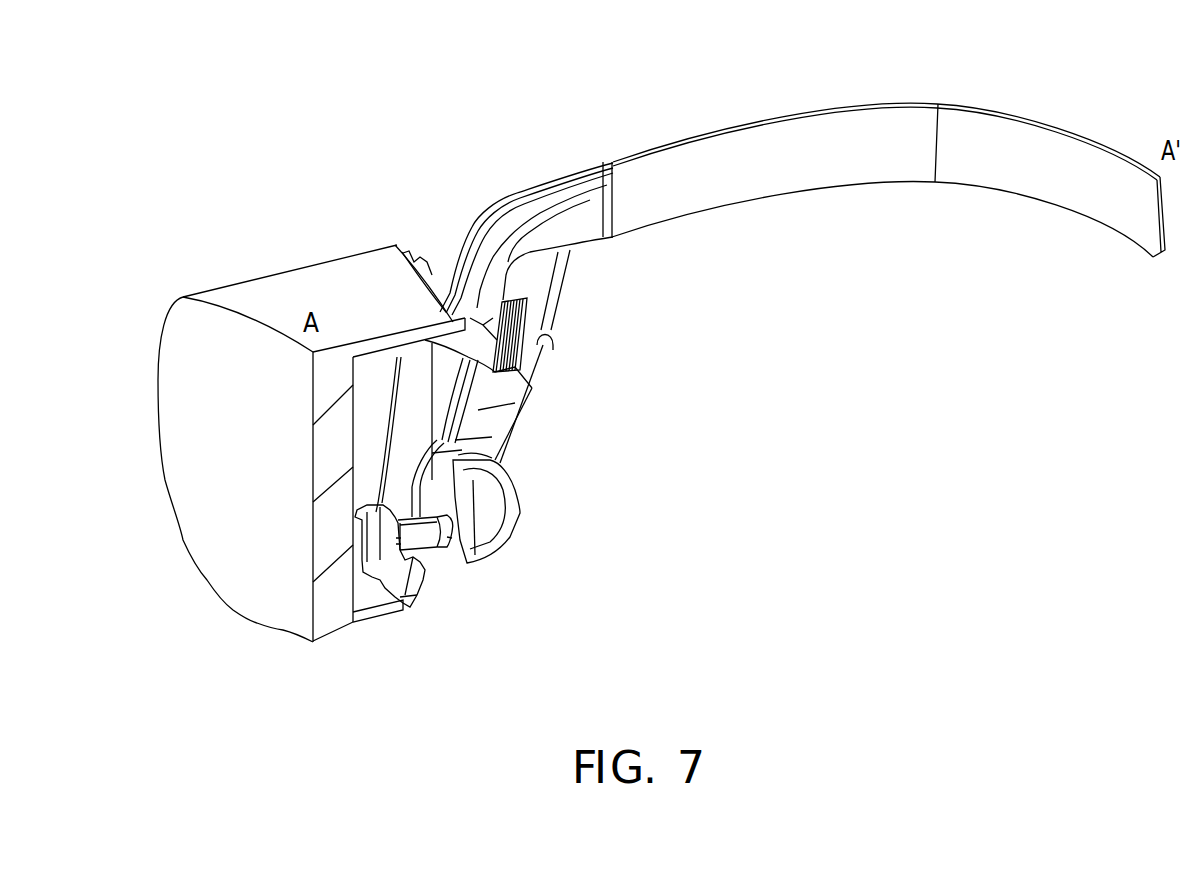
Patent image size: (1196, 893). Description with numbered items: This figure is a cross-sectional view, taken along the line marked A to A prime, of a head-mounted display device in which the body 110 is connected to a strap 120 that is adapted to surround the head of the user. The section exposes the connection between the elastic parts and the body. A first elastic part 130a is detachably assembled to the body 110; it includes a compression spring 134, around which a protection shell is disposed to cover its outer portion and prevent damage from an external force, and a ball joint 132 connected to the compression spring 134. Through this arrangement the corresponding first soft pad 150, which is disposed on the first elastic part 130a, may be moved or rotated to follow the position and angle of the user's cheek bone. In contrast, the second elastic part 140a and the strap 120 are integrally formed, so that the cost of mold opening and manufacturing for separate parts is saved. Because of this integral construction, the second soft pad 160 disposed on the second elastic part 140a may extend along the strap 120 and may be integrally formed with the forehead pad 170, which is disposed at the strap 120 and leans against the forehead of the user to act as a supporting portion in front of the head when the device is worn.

The body 110 is at (267, 297).
The strap 120 is at (838, 133).
The first elastic part 130a is at (425, 578).
The ball joint 132 is at (447, 547).
The compression spring 134 is at (423, 543).
The second elastic part 140a is at (439, 442).
The first soft pad 150 is at (507, 511).
The second soft pad 160 is at (503, 397).
The forehead pad 170 is at (520, 211).